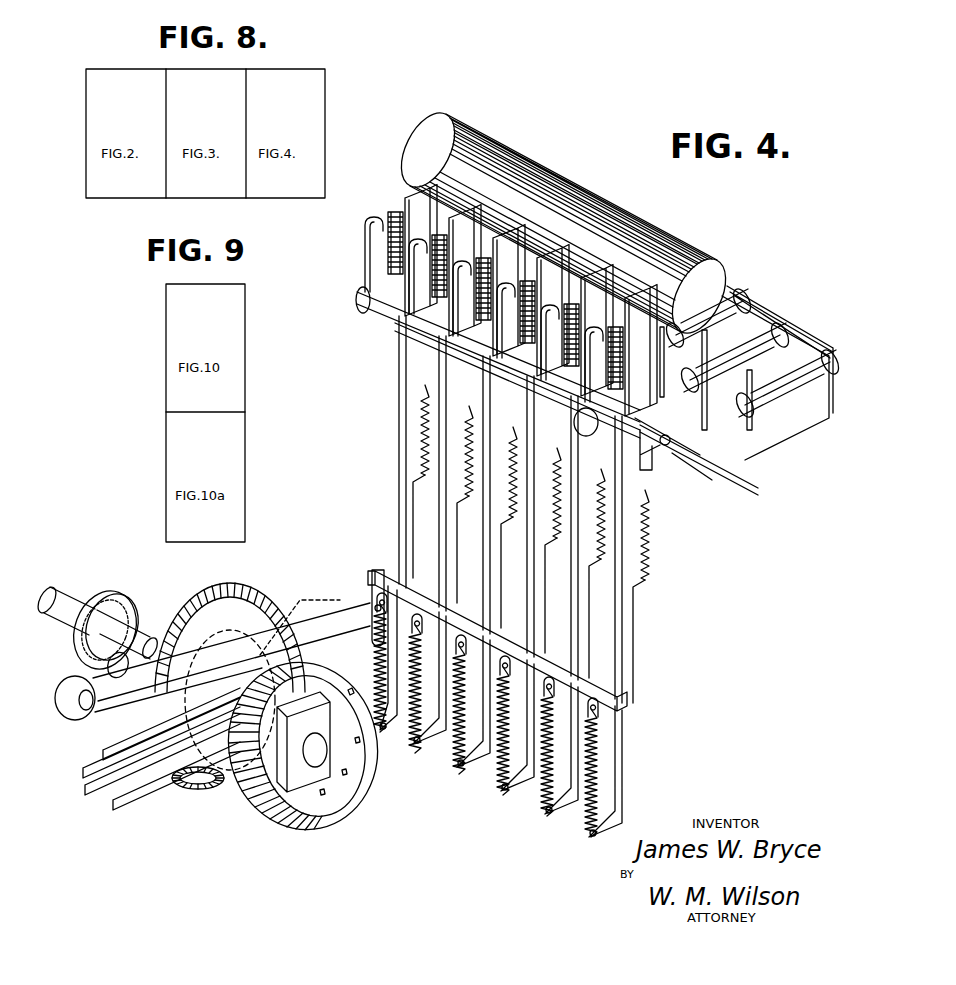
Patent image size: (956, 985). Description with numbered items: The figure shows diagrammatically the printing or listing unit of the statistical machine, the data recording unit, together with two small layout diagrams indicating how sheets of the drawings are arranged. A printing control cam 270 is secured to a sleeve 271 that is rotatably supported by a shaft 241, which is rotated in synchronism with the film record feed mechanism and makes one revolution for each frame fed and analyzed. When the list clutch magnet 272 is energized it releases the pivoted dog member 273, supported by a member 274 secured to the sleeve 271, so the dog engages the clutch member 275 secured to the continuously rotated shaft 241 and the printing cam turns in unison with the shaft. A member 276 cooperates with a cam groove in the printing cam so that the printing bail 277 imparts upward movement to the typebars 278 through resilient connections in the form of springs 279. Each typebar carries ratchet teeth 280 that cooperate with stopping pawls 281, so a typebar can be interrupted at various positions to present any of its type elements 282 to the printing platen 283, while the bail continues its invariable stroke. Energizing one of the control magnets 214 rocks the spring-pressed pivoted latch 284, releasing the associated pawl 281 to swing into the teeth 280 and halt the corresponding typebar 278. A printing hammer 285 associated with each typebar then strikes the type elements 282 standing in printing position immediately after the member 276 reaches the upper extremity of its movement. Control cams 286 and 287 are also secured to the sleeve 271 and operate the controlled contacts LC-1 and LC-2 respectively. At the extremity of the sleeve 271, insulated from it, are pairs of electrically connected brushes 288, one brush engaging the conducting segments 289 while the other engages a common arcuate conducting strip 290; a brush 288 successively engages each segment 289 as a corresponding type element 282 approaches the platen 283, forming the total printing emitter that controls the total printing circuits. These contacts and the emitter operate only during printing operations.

The printing platen 283 is at (483, 131).
The type elements 282 is at (388, 243).
The printing hammer 285 is at (368, 283).
The stopping pawls 281 is at (432, 384).
The ratchet teeth 280 is at (423, 440).
The typebars 278 is at (408, 469).
The printing bail 277 is at (545, 663).
The springs 279 is at (375, 650).
The control magnets 214 is at (800, 431).
The spring-pressed pivoted latch 284 is at (685, 477).
The shaft 241 is at (57, 594).
The clutch member 275 is at (120, 589).
The member 274 is at (133, 603).
The sleeve 271 is at (148, 638).
The pivoted dog member 273 is at (73, 659).
The list clutch magnet 272 is at (117, 718).
The member 276 is at (327, 614).
The control cam 286 is at (290, 606).
The printing control cam 270 is at (225, 587).
The conducting segments 289 is at (340, 768).
The common arcuate conducting strip 290 is at (363, 739).
The brushes 288 is at (242, 800).
The control cam 287 is at (251, 822).
The controlled contacts LC-1 is at (197, 702).
The controlled contacts LC-2 is at (205, 789).